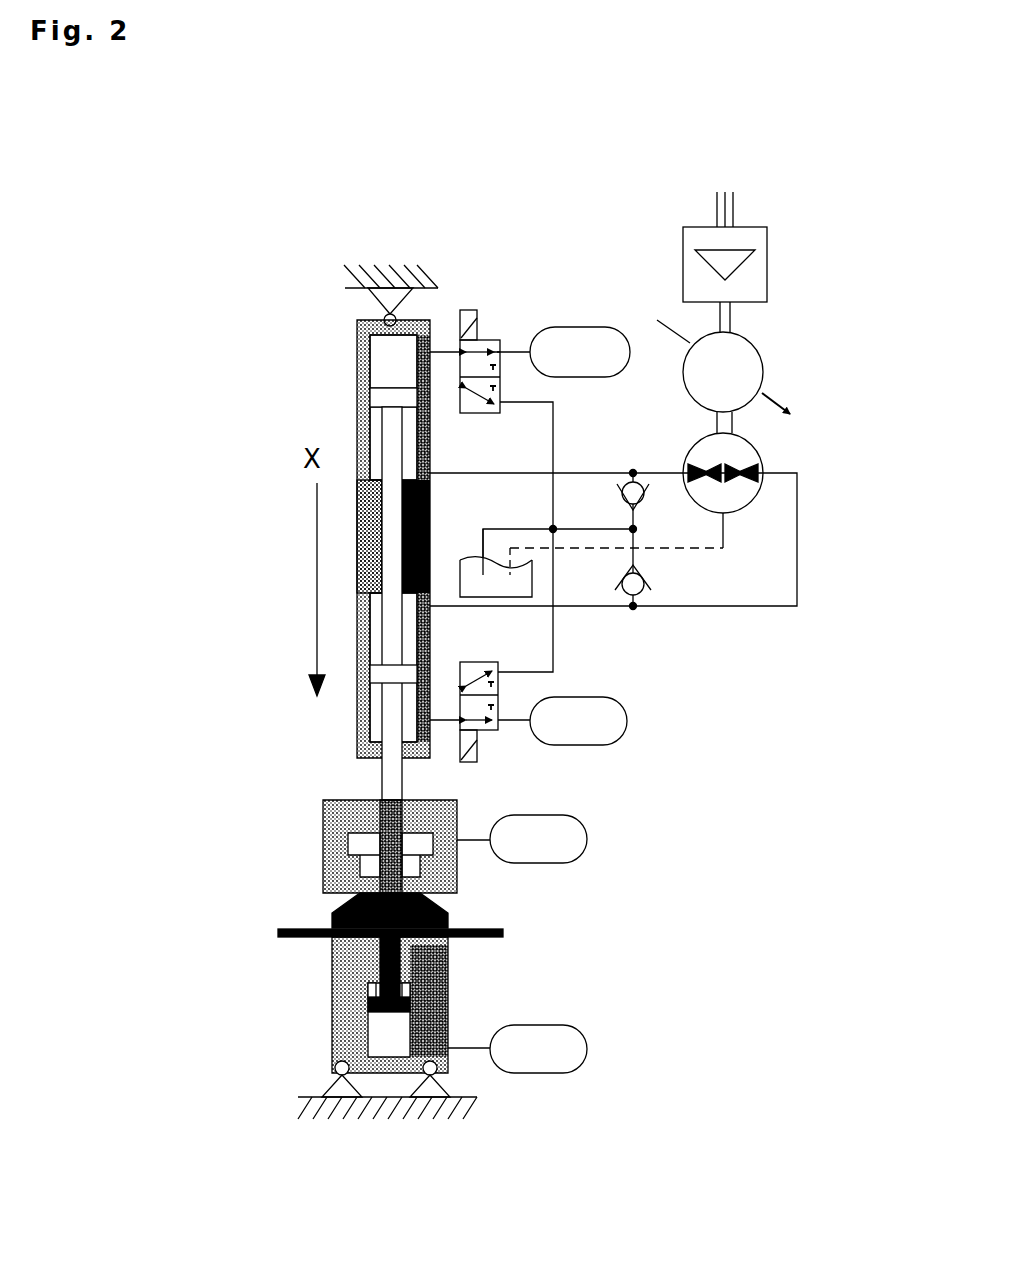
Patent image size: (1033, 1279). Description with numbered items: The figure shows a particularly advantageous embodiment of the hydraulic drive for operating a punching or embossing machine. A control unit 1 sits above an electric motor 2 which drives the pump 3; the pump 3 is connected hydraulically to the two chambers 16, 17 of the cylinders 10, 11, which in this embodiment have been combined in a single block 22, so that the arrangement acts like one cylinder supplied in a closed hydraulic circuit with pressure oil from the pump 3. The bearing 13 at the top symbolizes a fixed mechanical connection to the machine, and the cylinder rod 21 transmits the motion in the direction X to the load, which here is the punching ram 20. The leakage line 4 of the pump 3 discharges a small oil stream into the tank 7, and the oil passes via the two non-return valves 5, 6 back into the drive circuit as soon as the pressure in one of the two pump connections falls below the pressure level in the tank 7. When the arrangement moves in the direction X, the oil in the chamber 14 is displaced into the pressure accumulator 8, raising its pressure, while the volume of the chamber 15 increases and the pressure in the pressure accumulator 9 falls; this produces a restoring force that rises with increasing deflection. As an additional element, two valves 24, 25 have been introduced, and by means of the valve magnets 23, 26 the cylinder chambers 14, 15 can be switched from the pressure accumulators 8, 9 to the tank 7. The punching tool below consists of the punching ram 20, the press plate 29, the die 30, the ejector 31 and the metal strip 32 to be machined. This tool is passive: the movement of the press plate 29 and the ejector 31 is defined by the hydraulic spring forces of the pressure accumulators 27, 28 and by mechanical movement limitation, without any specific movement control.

The control unit 1 is at (738, 237).
The electric motor 2 is at (750, 362).
The pump 3 is at (750, 460).
The leakage line 4 is at (725, 527).
The non-return valve 5 is at (646, 497).
The non-return valve 6 is at (650, 588).
The tank 7 is at (523, 577).
The pressure accumulator 8 is at (607, 722).
The pressure accumulator 9 is at (560, 343).
The cylinder 10 is at (365, 740).
The cylinder 11 is at (418, 338).
The bearing 13 is at (391, 314).
The chamber 14 is at (377, 697).
The chamber 15 is at (385, 362).
The chamber 16 is at (377, 613).
The chamber 17 is at (373, 457).
The punching ram 20 is at (340, 818).
The cylinder rod 21 is at (387, 433).
The block 22 is at (367, 570).
The valve magnet 23 is at (477, 743).
The valve 24 is at (497, 340).
The valve 25 is at (497, 703).
The valve magnet 26 is at (467, 318).
The pressure accumulator 27 is at (520, 845).
The pressure accumulator 28 is at (587, 1062).
The press plate 29 is at (333, 913).
The die 30 is at (352, 977).
The ejector 31 is at (370, 1008).
The metal strip 32 is at (503, 935).